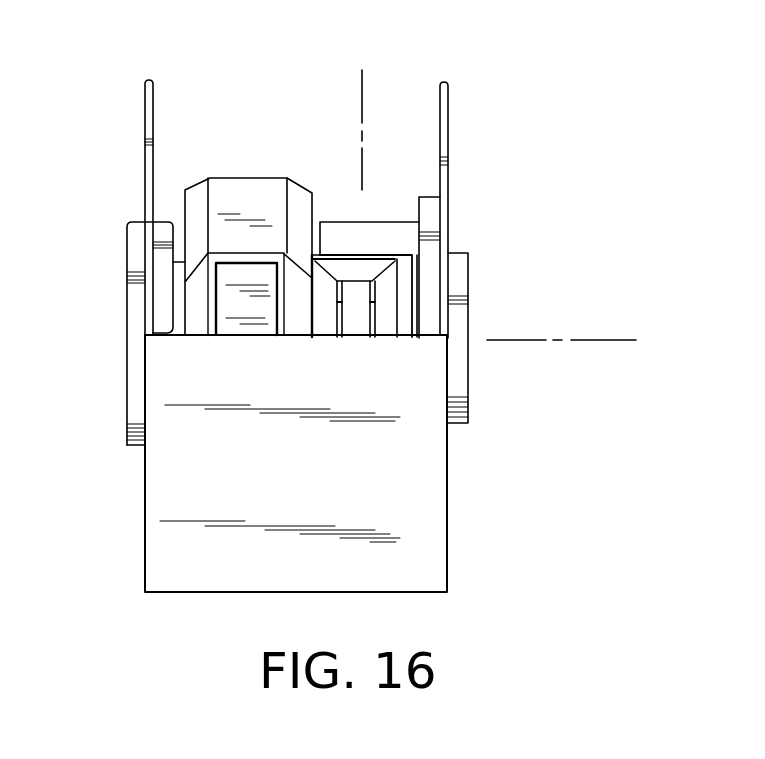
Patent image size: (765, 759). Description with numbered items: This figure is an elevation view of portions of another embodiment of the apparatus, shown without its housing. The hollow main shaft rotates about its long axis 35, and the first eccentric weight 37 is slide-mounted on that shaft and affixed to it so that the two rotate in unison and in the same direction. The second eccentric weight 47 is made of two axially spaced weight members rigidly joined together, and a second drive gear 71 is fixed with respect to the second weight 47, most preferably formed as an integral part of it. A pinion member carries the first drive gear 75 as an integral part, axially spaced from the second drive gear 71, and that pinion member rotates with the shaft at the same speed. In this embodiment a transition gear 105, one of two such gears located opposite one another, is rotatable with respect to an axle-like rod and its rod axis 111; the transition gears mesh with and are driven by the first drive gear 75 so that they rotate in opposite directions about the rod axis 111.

The long axis 35 is at (591, 340).
The first eccentric weight 37 is at (242, 272).
The second eccentric weight 47 is at (200, 315).
The second drive gear 71 is at (323, 314).
The first drive gear 75 is at (388, 285).
The transition gear 105 is at (368, 263).
The rod axis 111 is at (364, 78).